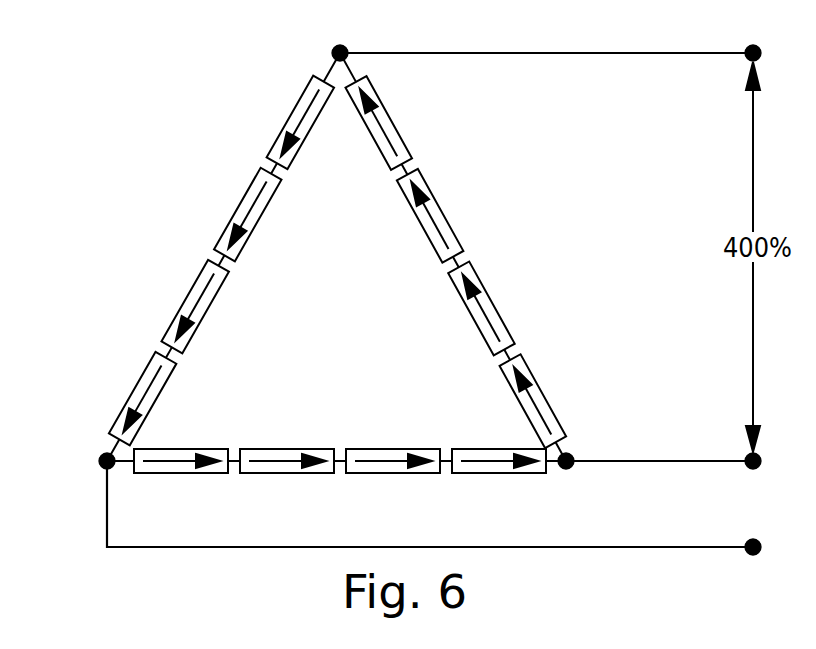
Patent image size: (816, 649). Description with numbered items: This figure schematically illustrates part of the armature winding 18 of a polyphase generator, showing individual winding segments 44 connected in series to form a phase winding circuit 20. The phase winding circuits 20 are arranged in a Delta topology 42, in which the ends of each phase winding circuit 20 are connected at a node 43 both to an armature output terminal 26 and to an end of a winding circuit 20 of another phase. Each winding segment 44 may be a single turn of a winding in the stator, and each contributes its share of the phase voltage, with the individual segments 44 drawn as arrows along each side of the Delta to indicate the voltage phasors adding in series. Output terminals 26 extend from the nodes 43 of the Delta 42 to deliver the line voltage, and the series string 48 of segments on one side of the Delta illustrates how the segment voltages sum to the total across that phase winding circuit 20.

The armature winding 18 is at (181, 92).
The phase winding circuit 20 is at (190, 209).
The output terminal 26 is at (760, 58).
The Delta winding topology 42 is at (348, 334).
The node 43 is at (348, 46).
The winding segment 44 is at (308, 108).
The current string 48 is at (482, 178).